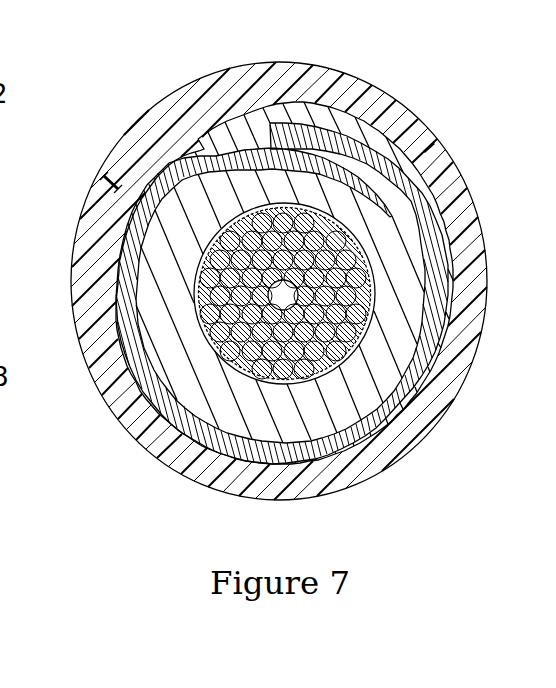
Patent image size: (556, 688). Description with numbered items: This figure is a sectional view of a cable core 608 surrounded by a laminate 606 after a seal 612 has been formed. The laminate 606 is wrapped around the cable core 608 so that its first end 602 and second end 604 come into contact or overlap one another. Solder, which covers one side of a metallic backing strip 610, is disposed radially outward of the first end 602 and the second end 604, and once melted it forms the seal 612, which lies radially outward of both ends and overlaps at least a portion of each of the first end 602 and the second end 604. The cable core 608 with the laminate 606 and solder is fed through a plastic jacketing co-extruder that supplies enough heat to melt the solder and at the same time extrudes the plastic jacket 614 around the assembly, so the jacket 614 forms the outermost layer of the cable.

The first end 602 is at (425, 147).
The second end 604 is at (110, 177).
The laminate 606 is at (157, 398).
The cable core 608 is at (200, 390).
The metallic backing strip 610 is at (281, 93).
The seal 612 is at (315, 112).
The plastic jacket 614 is at (383, 447).